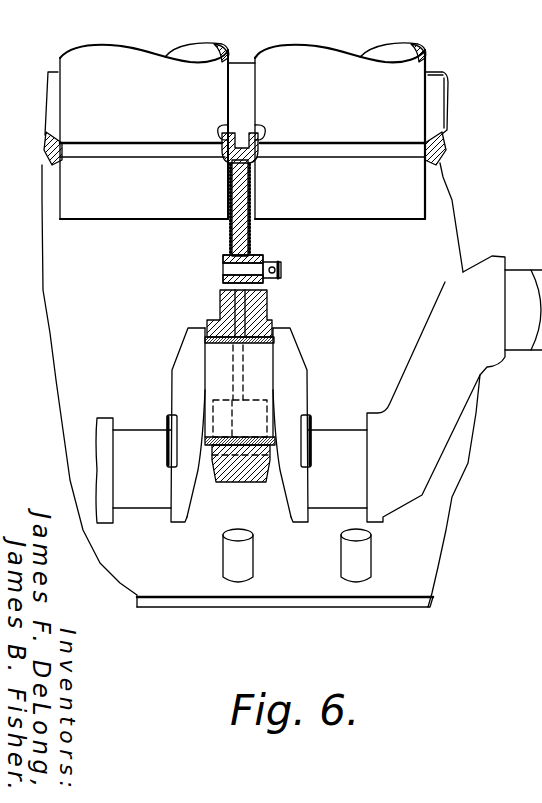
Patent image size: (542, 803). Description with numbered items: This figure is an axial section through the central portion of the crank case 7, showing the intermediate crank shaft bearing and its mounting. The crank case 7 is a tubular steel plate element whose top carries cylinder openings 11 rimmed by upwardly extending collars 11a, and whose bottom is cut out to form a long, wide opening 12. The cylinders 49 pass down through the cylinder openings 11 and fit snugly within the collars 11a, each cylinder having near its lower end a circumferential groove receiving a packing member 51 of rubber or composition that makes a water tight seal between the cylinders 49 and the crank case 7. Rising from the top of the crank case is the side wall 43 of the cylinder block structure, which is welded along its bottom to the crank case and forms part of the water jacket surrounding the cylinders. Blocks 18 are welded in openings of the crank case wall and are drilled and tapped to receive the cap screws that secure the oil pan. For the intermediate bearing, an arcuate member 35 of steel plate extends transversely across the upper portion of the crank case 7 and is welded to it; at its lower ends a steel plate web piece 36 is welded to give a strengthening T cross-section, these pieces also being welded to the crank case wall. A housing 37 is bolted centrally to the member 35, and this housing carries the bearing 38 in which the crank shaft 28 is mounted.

The crank case 7 is at (435, 532).
The cylinder openings 11 is at (229, 127).
The collars 11a is at (55, 143).
The opening 12 is at (275, 600).
The blocks 18 is at (250, 557).
The crank shaft 28 is at (420, 350).
The member 35 is at (230, 241).
The web piece 36 is at (262, 402).
The housing 37 is at (250, 308).
The bearing 38 is at (213, 345).
The side wall 43 is at (443, 85).
The cylinders 49 is at (133, 62).
The packing member 51 is at (62, 145).